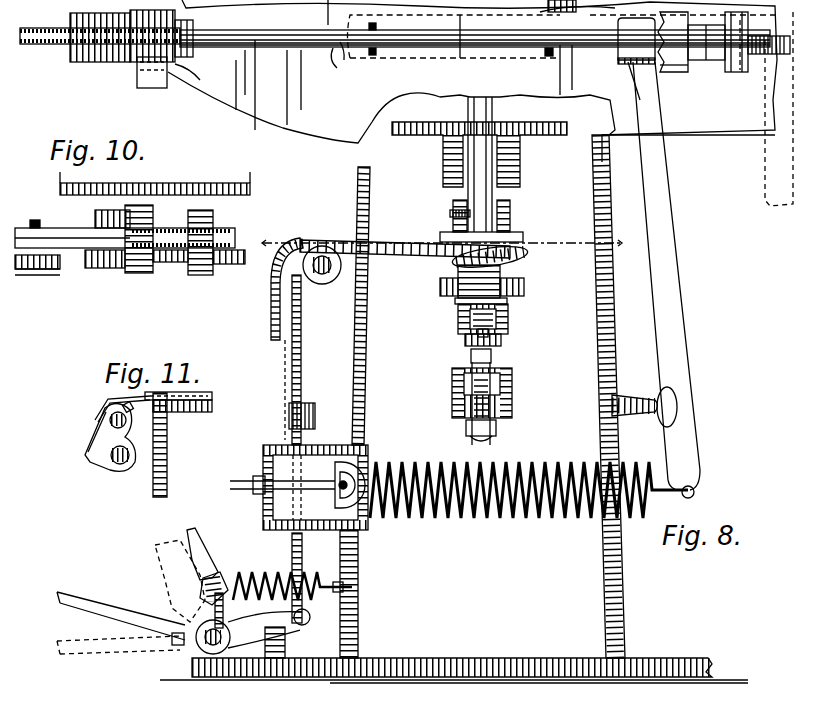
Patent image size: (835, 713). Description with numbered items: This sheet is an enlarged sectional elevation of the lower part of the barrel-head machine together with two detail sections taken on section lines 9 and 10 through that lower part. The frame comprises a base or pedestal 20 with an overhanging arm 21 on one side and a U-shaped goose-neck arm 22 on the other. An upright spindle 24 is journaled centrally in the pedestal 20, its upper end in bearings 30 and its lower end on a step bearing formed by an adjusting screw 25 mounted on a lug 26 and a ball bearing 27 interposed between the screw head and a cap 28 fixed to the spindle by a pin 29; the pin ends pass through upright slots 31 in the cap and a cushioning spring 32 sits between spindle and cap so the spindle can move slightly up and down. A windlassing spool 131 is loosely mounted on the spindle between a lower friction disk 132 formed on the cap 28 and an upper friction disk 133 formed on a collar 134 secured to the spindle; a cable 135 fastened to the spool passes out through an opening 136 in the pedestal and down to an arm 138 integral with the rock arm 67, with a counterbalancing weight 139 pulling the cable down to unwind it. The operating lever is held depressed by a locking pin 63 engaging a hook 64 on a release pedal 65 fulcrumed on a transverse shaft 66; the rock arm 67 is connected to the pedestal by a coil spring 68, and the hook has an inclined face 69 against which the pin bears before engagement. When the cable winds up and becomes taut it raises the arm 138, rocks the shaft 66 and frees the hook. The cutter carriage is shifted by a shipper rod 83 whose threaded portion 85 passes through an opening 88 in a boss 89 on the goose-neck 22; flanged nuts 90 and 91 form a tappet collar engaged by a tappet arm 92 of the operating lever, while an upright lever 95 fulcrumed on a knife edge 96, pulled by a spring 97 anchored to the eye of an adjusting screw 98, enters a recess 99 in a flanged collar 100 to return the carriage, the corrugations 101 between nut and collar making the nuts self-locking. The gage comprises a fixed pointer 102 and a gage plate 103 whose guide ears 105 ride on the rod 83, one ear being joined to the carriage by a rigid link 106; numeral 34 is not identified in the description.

In FIG. 8, the section line 9 is at (444, 244).
In FIG. 8, the section line 10 is at (540, 18).
In FIG. 8, the base or pedestal 20 is at (626, 575).
In FIG. 11, the base or pedestal 20 is at (168, 470).
In FIG. 8, the overhanging arm 21 is at (736, 135).
In FIG. 10, the overhanging arm 21 is at (186, 190).
In FIG. 8, the U-shaped arm or goose-neck 22 is at (236, 106).
In FIG. 8, the upright spindle 24 is at (466, 188).
In FIG. 8, the adjusting screw 25 is at (470, 420).
In FIG. 8, the lug 26 is at (512, 408).
In FIG. 8, the ball bearing 27 is at (470, 352).
In FIG. 8, the cap 28 is at (501, 332).
In FIG. 8, the pin 29 is at (507, 301).
In FIG. 8, the bearings 30 is at (521, 165).
In FIG. 8, the upright slots 31 is at (458, 306).
In FIG. 8, the cushioning or shock absorbing spring 32 is at (465, 327).
In FIG. 8, the nut 34 is at (748, 72).
In FIG. 8, the locking pin 63 is at (216, 585).
In FIG. 8, the hook 64 is at (198, 570).
In FIG. 8, the release pedal 65 is at (75, 598).
In FIG. 8, the transverse shaft 66 is at (200, 647).
In FIG. 8, the rock arm 67 is at (210, 603).
In FIG. 8, the coil spring 68 is at (318, 574).
In FIG. 8, the inclined face 69 is at (200, 548).
In FIG. 8, the shipper rod 83 is at (337, 47).
In FIG. 10, the shipper rod 83 is at (55, 276).
In FIG. 11, the shipper rod 83 is at (122, 466).
In FIG. 8, the screw thread 85 is at (48, 46).
In FIG. 8, the opening 88 is at (68, 32).
In FIG. 8, the boss 89 is at (102, 62).
In FIG. 8, the flanged nut 90 is at (686, 72).
In FIG. 10, the flanged nut 90 is at (152, 273).
In FIG. 8, the flanged nut 91 is at (708, 60).
In FIG. 10, the flanged nut 91 is at (192, 275).
In FIG. 8, the tappet arm 92 is at (762, 203).
In FIG. 10, the tappet arm 92 is at (238, 264).
In FIG. 8, the upright lever 95 is at (668, 272).
In FIG. 10, the upright lever 95 is at (95, 252).
In FIG. 8, the knife edge 96 is at (672, 412).
In FIG. 8, the spring 97 is at (514, 519).
In FIG. 8, the adjusting screw 98 is at (323, 490).
In FIG. 10, the vertical slot or recess 99 is at (95, 228).
In FIG. 8, the flanged collar 100 is at (630, 62).
In FIG. 10, the flanged collar 100 is at (118, 270).
In FIG. 8, the corrugations 101 is at (655, 70).
In FIG. 11, the fixed indicator or pointer 102 is at (100, 412).
In FIG. 8, the gage plate 103 is at (461, 58).
In FIG. 10, the gage plate 103 is at (25, 270).
In FIG. 11, the gage plate 103 is at (85, 442).
In FIG. 8, the guide ears 105 is at (374, 52).
In FIG. 10, the guide ears 105 is at (38, 218).
In FIG. 11, the guide ears 105 is at (106, 470).
In FIG. 8, the rigid link 106 is at (598, 50).
In FIG. 8, the windlassing spool 131 is at (452, 228).
In FIG. 8, the friction disk 132 is at (522, 288).
In FIG. 8, the friction disk 133 is at (523, 236).
In FIG. 8, the collar 134 is at (312, 241).
In FIG. 8, the cable or chain 135 is at (290, 332).
In FIG. 8, the opening 136 is at (342, 258).
In FIG. 8, the arm 138 is at (302, 626).
In FIG. 8, the counterbalancing weight 139 is at (288, 413).